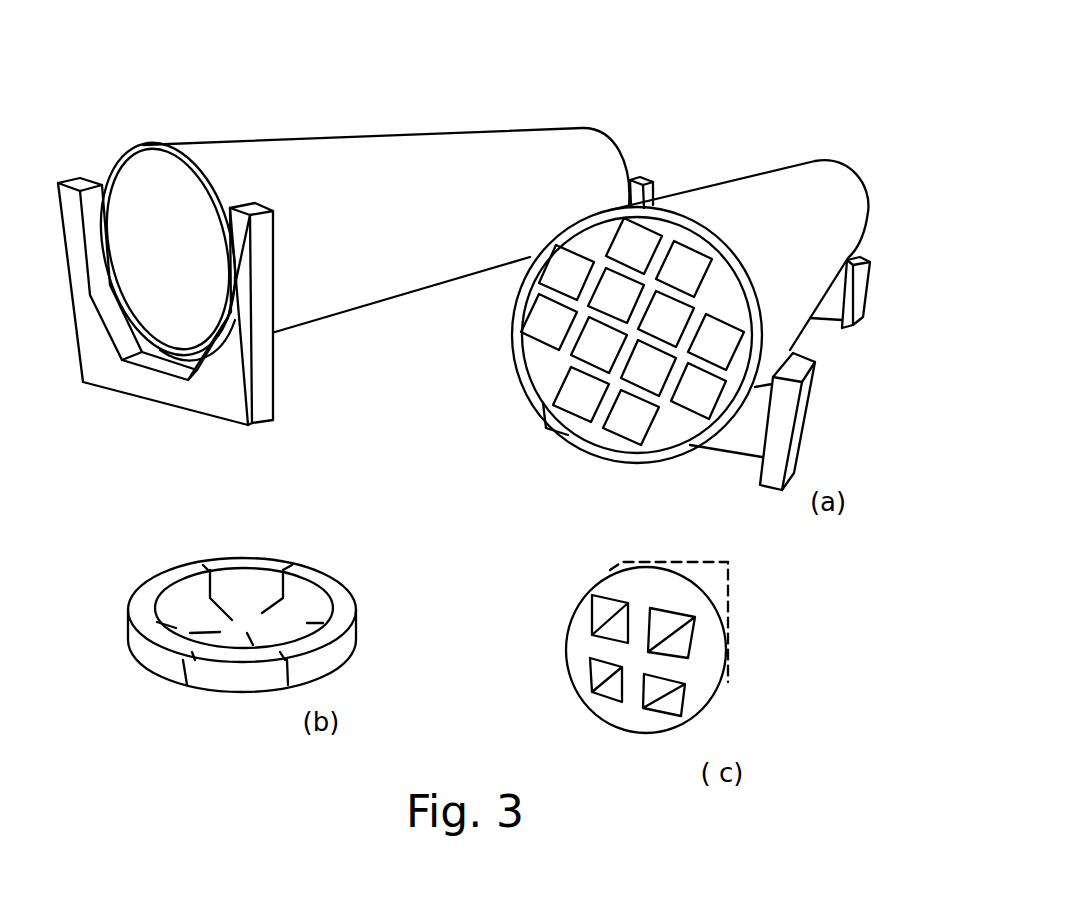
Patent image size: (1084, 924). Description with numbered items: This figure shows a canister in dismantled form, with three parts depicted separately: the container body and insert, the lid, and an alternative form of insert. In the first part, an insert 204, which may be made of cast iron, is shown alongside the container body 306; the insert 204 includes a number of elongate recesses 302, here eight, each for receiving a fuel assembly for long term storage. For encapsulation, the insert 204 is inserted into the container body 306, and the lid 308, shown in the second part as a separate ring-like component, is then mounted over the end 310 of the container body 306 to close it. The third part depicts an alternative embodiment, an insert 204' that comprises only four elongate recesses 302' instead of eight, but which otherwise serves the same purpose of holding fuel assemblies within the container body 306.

The end 310 is at (147, 158).
The container body 306 is at (347, 163).
The insert 204 is at (729, 325).
The elongate recesses 302 is at (632, 380).
The lid 308 is at (247, 676).
The insert 204' is at (693, 654).
The elongate recesses 302' is at (632, 699).